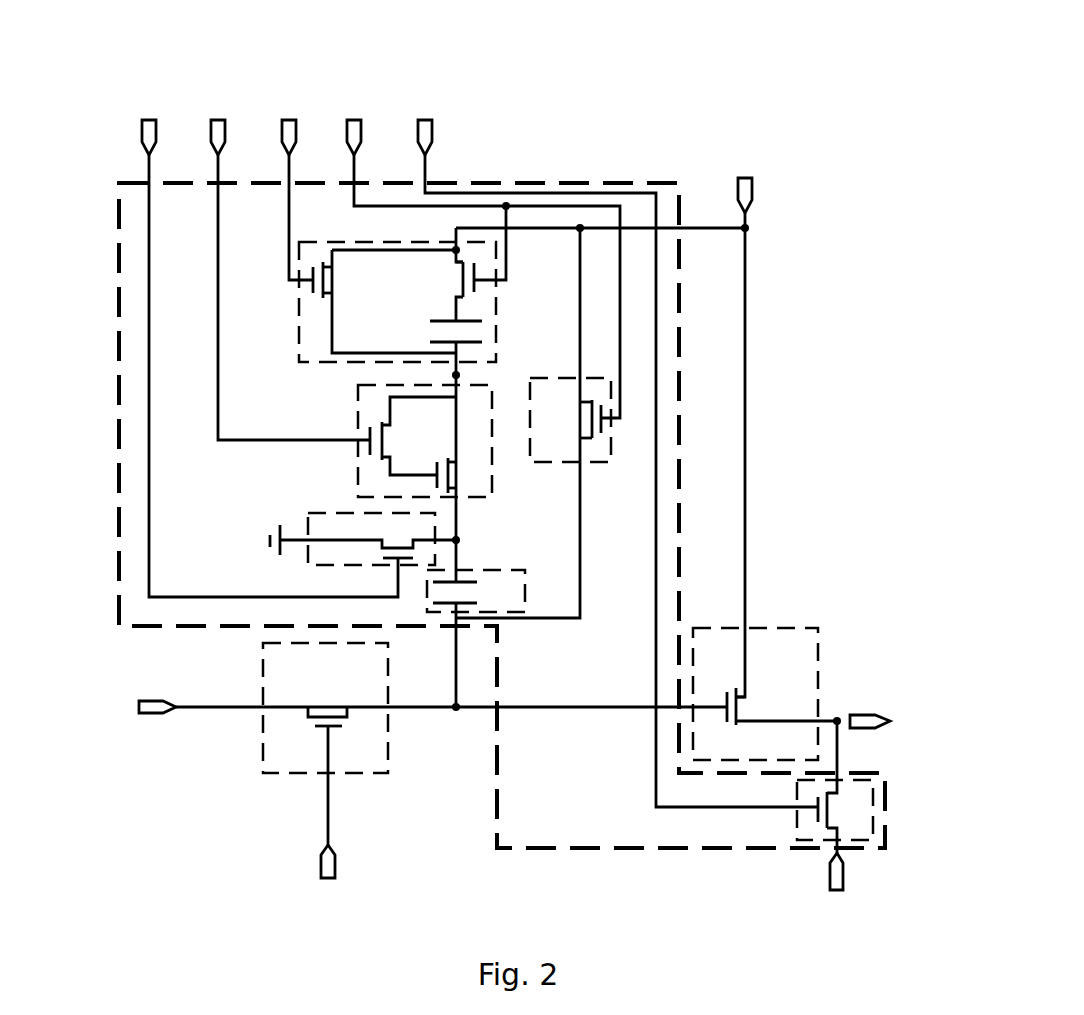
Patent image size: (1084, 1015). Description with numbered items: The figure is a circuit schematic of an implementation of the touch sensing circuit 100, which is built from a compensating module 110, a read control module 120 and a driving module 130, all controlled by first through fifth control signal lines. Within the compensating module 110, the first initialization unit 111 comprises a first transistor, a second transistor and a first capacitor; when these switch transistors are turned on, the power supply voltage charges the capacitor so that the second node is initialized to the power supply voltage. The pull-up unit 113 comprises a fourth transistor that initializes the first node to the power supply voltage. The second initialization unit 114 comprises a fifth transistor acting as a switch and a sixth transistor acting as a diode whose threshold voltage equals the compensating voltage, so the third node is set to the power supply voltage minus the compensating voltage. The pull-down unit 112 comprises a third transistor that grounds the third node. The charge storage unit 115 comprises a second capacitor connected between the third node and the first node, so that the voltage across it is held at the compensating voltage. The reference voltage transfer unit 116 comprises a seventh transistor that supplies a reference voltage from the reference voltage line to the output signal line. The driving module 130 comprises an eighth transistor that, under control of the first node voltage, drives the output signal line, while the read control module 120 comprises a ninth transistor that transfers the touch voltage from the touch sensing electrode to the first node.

The touch sensing circuit 100 is at (550, 93).
The compensating module 110 is at (590, 182).
The first initialization unit 111 is at (388, 241).
The pull-down unit 112 is at (308, 513).
The pull-up unit 113 is at (533, 378).
The second initialization unit 114 is at (490, 497).
The charge storage unit 115 is at (524, 570).
The reference voltage transfer unit 116 is at (800, 808).
The read control module 120 is at (388, 685).
The driving module 130 is at (818, 650).